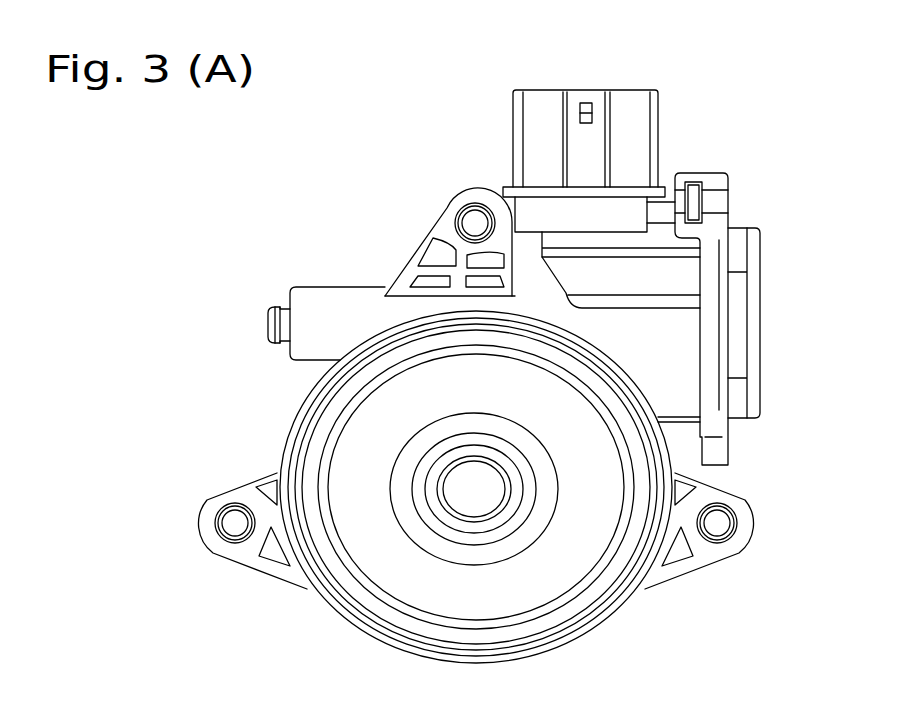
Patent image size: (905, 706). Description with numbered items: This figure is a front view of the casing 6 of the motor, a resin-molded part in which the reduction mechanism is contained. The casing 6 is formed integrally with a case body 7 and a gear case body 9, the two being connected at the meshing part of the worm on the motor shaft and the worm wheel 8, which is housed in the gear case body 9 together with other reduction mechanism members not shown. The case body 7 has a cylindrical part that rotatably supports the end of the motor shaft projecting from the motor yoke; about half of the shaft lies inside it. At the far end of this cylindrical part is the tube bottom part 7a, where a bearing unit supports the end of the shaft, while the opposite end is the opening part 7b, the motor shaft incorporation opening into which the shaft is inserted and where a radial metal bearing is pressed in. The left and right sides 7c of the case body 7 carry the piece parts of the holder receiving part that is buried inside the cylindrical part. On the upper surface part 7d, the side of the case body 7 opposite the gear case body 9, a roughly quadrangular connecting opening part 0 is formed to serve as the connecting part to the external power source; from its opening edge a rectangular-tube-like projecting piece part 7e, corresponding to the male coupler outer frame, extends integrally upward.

The connecting opening part 0 is at (629, 78).
The casing 6 is at (711, 77).
The case body 7 is at (421, 156).
The tube bottom part 7a is at (313, 343).
The opening part 7b is at (769, 305).
The left and right sides 7c is at (673, 372).
The upper surface part 7d is at (545, 207).
The rectangular-tube-like projecting piece part 7e is at (635, 138).
The worm wheel 8 is at (418, 585).
The gear case body 9 is at (337, 587).